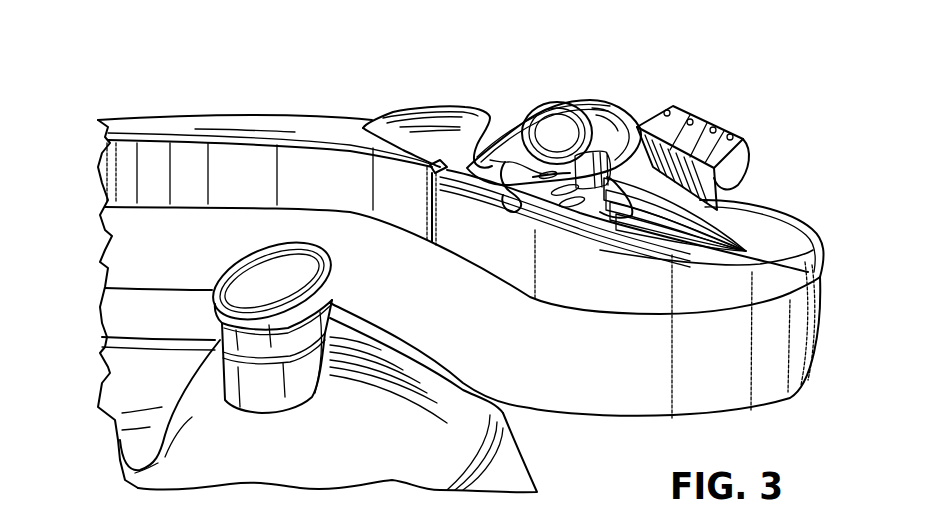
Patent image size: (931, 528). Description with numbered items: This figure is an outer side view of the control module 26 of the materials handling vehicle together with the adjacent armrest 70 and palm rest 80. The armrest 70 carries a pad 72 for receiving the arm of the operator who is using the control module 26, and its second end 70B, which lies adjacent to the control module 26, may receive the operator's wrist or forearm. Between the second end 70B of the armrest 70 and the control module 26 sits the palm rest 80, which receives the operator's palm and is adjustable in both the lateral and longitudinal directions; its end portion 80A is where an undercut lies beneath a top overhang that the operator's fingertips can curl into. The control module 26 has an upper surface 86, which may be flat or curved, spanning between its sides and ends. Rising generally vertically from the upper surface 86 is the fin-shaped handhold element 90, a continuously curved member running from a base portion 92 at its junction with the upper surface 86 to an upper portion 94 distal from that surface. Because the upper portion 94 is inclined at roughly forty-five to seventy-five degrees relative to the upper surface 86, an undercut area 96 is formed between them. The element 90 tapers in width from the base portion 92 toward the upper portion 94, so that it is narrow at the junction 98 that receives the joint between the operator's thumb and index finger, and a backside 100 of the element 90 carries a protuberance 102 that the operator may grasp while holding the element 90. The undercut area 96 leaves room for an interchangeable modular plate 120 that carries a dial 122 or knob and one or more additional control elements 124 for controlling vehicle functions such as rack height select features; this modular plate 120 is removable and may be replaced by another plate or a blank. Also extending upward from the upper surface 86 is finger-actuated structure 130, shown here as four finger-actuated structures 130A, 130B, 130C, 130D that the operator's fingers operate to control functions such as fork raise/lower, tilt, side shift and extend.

The control module 26 is at (625, 61).
The armrest 70 is at (128, 180).
The second end of the armrest 70B is at (340, 112).
The pad 72 is at (183, 157).
The palm rest 80 is at (430, 108).
The end portion of the palm rest 80A is at (466, 108).
The upper surface 86 is at (788, 240).
The fin-shaped handhold element 90 is at (588, 100).
The base portion 92 is at (493, 107).
The upper portion 94 is at (604, 97).
The undercut area 96 is at (525, 108).
The junction 98 is at (500, 108).
The backside 100 is at (620, 112).
The protuberance 102 is at (557, 127).
The modular plate 120 is at (607, 210).
The dial 122 is at (553, 175).
The additional control elements 124 is at (556, 197).
The finger-actuated structure 130 is at (735, 143).
The finger-actuated structure 130A is at (685, 115).
The finger-actuated structure 130B is at (715, 118).
The finger-actuated structure 130C is at (736, 128).
The finger-actuated structure 130D is at (740, 181).